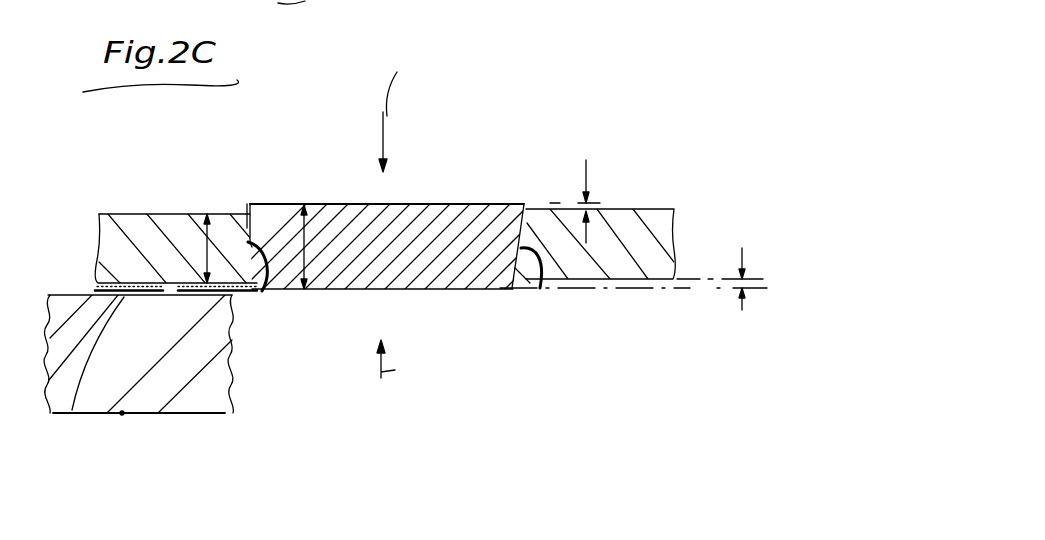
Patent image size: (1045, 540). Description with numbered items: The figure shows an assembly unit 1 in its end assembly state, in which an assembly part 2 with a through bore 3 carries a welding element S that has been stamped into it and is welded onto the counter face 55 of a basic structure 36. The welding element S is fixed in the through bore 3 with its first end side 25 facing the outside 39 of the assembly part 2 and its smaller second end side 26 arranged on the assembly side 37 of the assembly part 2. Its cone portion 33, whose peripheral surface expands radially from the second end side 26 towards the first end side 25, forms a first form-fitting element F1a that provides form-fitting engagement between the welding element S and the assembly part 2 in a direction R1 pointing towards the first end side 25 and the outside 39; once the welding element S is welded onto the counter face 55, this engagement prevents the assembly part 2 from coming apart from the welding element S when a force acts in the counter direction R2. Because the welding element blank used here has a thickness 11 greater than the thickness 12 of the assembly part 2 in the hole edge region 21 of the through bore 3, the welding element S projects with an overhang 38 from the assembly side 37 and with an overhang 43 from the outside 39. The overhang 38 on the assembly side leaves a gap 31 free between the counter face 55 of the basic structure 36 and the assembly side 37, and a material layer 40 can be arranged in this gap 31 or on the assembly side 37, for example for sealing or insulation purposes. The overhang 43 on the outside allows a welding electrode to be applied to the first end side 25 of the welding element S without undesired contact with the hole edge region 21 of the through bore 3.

The assembly unit 1 is at (659, 185).
The assembly part 2 is at (581, 272).
The through bore 3 is at (263, 292).
The thickness of the welding element blank 11 is at (308, 291).
The thickness of the assembly part 12 is at (207, 245).
The hole edge region 21 is at (241, 245).
The first end side 25 is at (323, 203).
The second end side 26 is at (345, 292).
The gap 31 is at (139, 434).
The cone portion 33 is at (569, 370).
The basic structure 36 is at (209, 396).
The assembly side 37 is at (167, 292).
The overhang 38 is at (741, 262).
The outside 39 is at (168, 211).
The material layer 40 is at (139, 434).
The overhang 43 is at (587, 173).
The counter face 55 is at (62, 293).
The welding element S is at (428, 224).
The direction R1 is at (408, 107).
The direction R2 is at (420, 365).
The first form-fitting element F1a is at (540, 288).